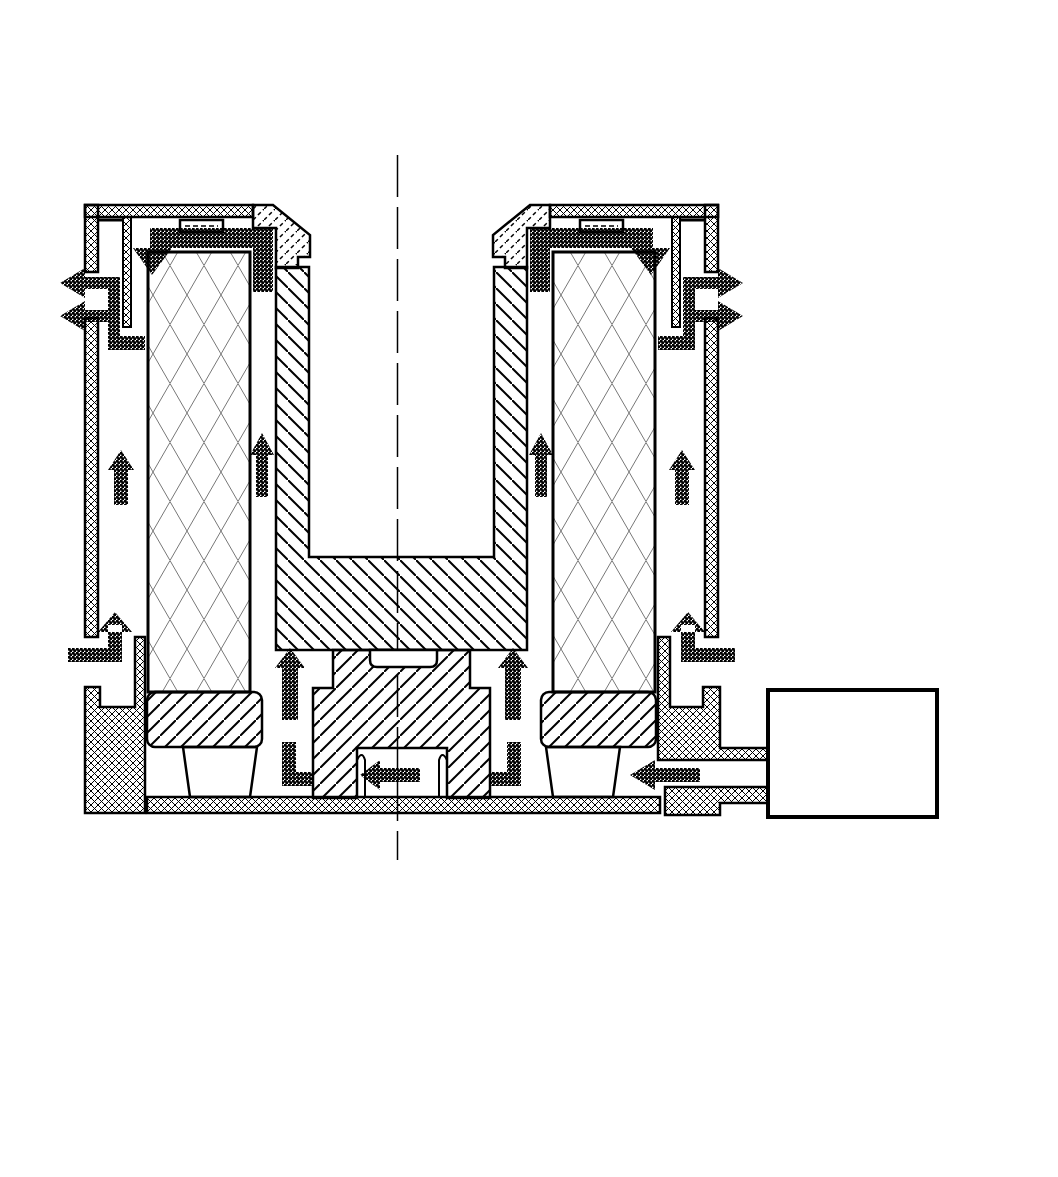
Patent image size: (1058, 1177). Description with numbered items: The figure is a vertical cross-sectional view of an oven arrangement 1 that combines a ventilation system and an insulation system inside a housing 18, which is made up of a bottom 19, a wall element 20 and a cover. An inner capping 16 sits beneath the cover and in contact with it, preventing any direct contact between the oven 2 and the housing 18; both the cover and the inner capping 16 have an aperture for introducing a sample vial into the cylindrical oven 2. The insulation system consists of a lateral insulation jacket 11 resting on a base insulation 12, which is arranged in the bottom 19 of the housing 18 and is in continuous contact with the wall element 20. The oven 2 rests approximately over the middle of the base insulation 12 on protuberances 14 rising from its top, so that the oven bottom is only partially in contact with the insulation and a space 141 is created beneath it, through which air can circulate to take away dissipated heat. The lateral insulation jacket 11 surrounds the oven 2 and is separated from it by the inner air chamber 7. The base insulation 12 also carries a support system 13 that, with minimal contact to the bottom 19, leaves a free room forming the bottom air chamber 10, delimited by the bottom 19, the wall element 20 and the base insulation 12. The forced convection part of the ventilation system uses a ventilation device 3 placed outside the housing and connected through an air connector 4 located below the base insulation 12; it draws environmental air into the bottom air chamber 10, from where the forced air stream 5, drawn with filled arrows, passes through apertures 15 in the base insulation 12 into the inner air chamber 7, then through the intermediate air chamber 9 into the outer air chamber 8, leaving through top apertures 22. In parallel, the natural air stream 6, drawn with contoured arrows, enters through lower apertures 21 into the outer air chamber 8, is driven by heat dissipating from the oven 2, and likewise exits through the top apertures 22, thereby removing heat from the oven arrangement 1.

The oven arrangement 1 is at (182, 142).
The oven 2 is at (285, 330).
The ventilation device 3 is at (890, 785).
The air connector 4 is at (735, 795).
The forced air stream 5 is at (655, 775).
The natural air stream 6 is at (715, 665).
The inner air chamber 7 is at (538, 415).
The outer air chamber 8 is at (678, 425).
The intermediate air chamber 9 is at (605, 240).
The bottom air chamber 10 is at (540, 790).
The lateral insulation jacket 11 is at (590, 555).
The base insulation 12 is at (185, 712).
The support system 13 is at (225, 775).
The protuberances 14 is at (448, 662).
The space 141 is at (413, 662).
The apertures 15 is at (273, 717).
The inner capping 16 is at (512, 240).
The housing 18 is at (740, 582).
The bottom 19 is at (585, 805).
The wall element 20 is at (715, 465).
The lower apertures 21 is at (712, 675).
The top apertures 22 is at (700, 298).